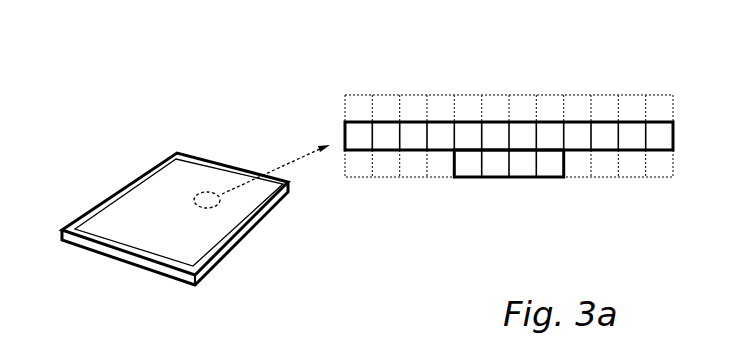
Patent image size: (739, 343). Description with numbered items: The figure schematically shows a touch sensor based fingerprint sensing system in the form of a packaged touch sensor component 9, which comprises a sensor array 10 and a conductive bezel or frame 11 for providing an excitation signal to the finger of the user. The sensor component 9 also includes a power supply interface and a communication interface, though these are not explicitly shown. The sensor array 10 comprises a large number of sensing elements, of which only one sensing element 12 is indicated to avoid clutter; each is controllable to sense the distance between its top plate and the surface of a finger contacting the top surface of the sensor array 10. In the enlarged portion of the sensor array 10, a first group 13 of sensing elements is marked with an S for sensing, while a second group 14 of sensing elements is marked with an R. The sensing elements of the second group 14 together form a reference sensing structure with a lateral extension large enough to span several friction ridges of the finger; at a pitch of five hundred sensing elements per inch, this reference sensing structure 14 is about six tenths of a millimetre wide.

The packaged touch sensor component 9 is at (238, 126).
The sensor array 10 is at (170, 178).
The conductive bezel or frame 11 is at (105, 208).
The sensing element 12 is at (443, 112).
The first group of sensing elements 13 is at (488, 186).
The second group of sensing elements (reference sensing structure) 14 is at (580, 116).